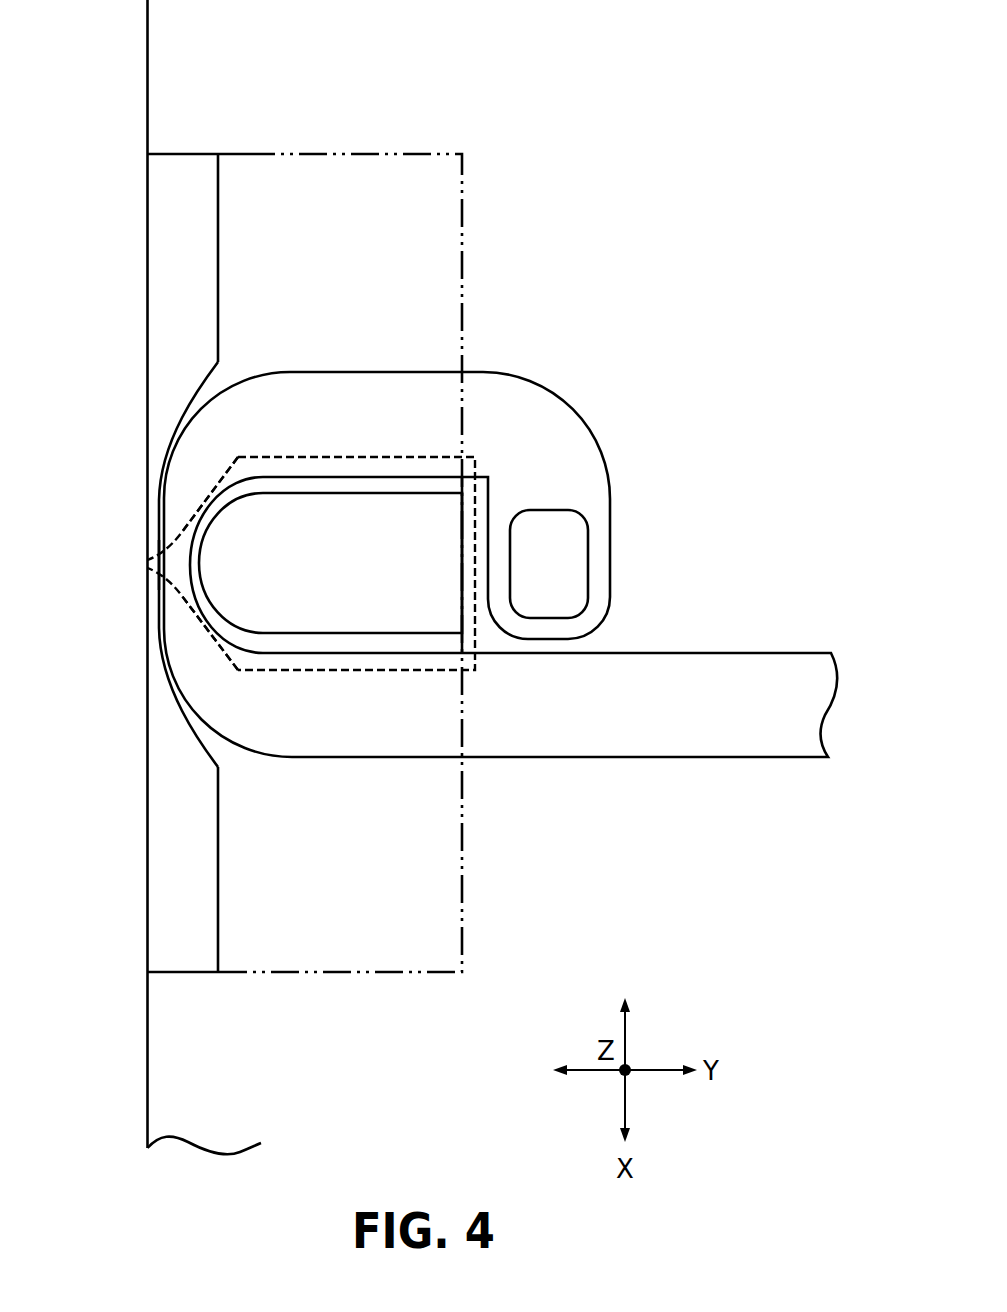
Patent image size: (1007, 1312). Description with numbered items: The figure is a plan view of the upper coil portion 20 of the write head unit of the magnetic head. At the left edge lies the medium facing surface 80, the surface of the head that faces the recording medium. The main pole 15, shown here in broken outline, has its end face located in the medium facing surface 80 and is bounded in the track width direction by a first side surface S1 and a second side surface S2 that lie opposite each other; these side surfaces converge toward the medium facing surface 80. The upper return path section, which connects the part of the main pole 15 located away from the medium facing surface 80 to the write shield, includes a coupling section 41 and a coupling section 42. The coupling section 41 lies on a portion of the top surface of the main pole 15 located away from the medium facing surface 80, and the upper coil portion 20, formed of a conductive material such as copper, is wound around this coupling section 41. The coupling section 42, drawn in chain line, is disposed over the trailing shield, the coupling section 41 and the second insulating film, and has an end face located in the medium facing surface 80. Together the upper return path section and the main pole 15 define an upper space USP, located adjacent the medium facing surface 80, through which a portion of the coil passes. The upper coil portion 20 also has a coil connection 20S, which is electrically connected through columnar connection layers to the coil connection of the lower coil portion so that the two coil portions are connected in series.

The medium facing surface 80 is at (136, 18).
The coupling section 42 is at (255, 148).
The upper coil portion 20 is at (434, 362).
The coupling section 41 is at (375, 505).
The coil connection 20S is at (586, 568).
The main pole 15 is at (331, 447).
The first side surface S1 is at (232, 478).
The second side surface S2 is at (232, 655).
The upper space USP is at (155, 499).